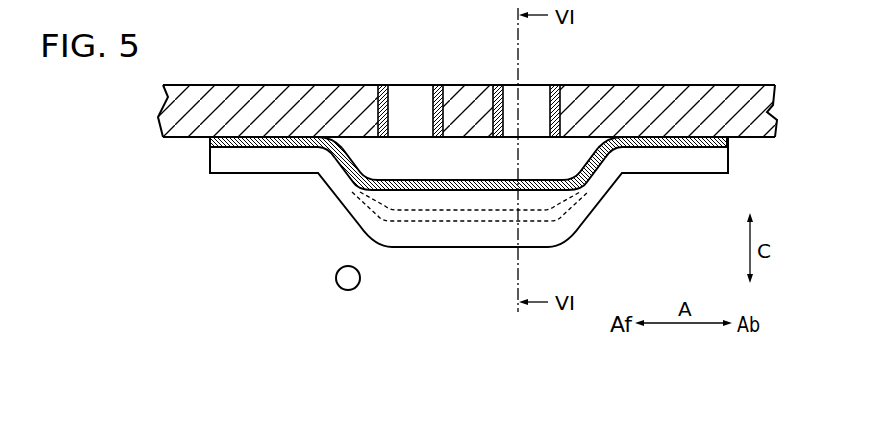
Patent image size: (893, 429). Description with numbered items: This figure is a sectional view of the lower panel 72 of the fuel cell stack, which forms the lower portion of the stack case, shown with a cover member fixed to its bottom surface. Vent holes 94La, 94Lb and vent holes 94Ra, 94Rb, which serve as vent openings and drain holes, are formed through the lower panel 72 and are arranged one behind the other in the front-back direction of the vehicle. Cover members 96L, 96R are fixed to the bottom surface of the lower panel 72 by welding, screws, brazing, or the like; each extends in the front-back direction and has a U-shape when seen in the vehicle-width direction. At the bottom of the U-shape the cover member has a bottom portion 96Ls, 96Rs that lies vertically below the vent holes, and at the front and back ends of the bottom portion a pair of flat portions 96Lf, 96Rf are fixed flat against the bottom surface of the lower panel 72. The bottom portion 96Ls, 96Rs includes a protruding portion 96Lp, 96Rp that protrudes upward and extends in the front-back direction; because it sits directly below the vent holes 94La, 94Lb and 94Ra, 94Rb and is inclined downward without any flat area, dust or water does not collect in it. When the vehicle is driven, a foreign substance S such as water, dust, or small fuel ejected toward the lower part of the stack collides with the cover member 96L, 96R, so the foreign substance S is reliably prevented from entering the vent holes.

The lower panel 72 is at (309, 79).
The vent hole 94La is at (403, 90).
The vent hole 94Ra is at (388, 104).
The vent hole 94Lb is at (560, 90).
The vent hole 94Rb is at (549, 104).
The flat portion 96Lf is at (469, 116).
The flat portion 96Rf is at (243, 140).
The protruding portion 96Lp is at (462, 242).
The protruding portion 96Rp is at (432, 182).
The cover member 96L is at (469, 199).
The cover member 96R is at (602, 223).
The bottom portion 96Ls is at (470, 242).
The bottom portion 96Rs is at (450, 210).
The foreign substance S is at (338, 193).